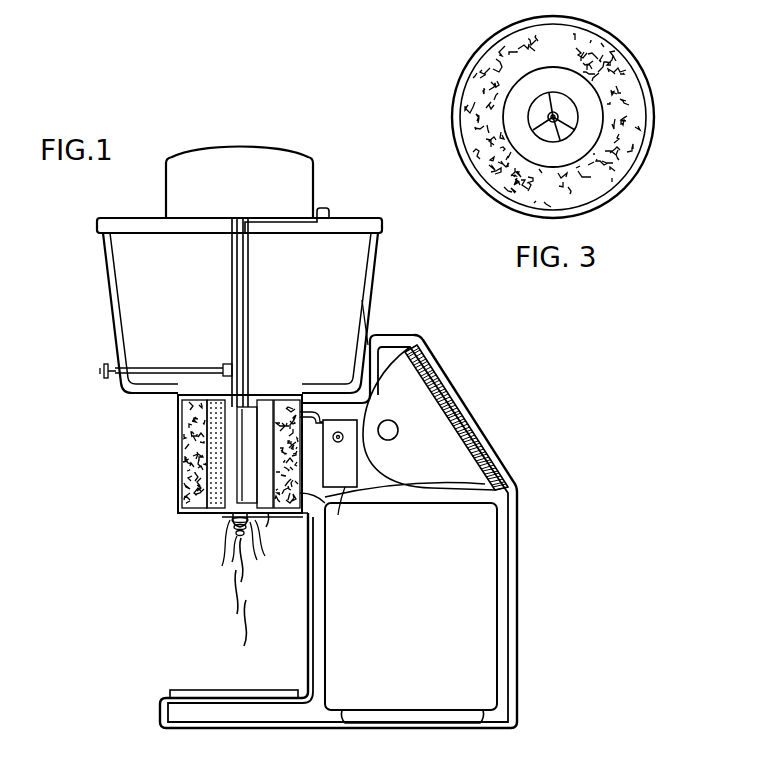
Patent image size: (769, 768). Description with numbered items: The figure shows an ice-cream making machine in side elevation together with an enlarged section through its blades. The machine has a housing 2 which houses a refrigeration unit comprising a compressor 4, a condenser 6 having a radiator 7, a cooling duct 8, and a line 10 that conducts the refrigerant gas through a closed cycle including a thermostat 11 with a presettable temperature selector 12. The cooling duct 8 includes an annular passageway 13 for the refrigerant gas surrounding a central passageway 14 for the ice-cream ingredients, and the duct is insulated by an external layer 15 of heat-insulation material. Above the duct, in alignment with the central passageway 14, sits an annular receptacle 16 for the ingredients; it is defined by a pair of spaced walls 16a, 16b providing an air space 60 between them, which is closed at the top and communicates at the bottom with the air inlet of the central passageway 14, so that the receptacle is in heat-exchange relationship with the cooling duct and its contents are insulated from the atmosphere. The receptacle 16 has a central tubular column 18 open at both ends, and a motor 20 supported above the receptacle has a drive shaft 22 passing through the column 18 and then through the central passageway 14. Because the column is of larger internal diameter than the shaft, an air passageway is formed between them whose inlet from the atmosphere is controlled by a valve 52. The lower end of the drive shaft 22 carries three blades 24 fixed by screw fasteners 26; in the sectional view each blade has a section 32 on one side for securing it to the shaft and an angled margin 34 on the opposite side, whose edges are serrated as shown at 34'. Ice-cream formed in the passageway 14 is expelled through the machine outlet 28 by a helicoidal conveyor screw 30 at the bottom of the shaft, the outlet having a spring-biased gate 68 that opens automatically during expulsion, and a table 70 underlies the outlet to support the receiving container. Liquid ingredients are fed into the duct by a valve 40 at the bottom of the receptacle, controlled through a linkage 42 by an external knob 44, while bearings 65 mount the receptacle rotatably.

In FIG. 1, the housing 2 is at (517, 575).
In FIG. 1, the compressor 4 is at (422, 602).
In FIG. 1, the condenser 6 is at (422, 444).
In FIG. 1, the radiator 7 is at (478, 430).
In FIG. 1, the cooling duct 8 is at (257, 520).
In FIG. 1, the line 10 is at (268, 510).
In FIG. 1, the thermostat 11 is at (336, 514).
In FIG. 1, the presettable temperature selector 12 is at (338, 443).
In FIG. 1, the annular passageway 13 is at (265, 405).
In FIG. 3, the annular passageway 13 is at (513, 117).
In FIG. 1, the central passageway 14 is at (252, 390).
In FIG. 3, the central passageway 14 is at (540, 107).
In FIG. 1, the external layer of heat-insulation material 15 is at (287, 420).
In FIG. 1, the receptacle 16 is at (376, 255).
In FIG. 1, the wall 16a is at (367, 330).
In FIG. 1, the wall 16b is at (370, 305).
In FIG. 1, the central tubular column 18 is at (250, 262).
In FIG. 1, the motor 20 is at (170, 188).
In FIG. 1, the motor drive shaft 22 is at (232, 268).
In FIG. 3, the motor drive shaft 22 is at (560, 123).
In FIG. 1, the blades 24 is at (213, 512).
In FIG. 3, the blades 24 is at (557, 143).
In FIG. 1, the screw fasteners 26 is at (233, 526).
In FIG. 3, the screw fasteners 26 is at (545, 118).
In FIG. 1, the machine outlet 28 is at (256, 556).
In FIG. 1, the helicoidal conveyor screw 30 is at (232, 560).
In FIG. 3, the section 32 is at (563, 113).
In FIG. 3, the angled margin 34 is at (526, 120).
In FIG. 1, the serrated edges 34' is at (178, 454).
In FIG. 1, the valve 40 is at (225, 365).
In FIG. 1, the linkage 42 is at (140, 369).
In FIG. 1, the knob 44 is at (100, 373).
In FIG. 1, the valve 52 is at (333, 212).
In FIG. 1, the air space 60 is at (372, 280).
In FIG. 1, the bearings 65 is at (180, 412).
In FIG. 1, the gate 68 is at (225, 590).
In FIG. 1, the table 70 is at (213, 688).